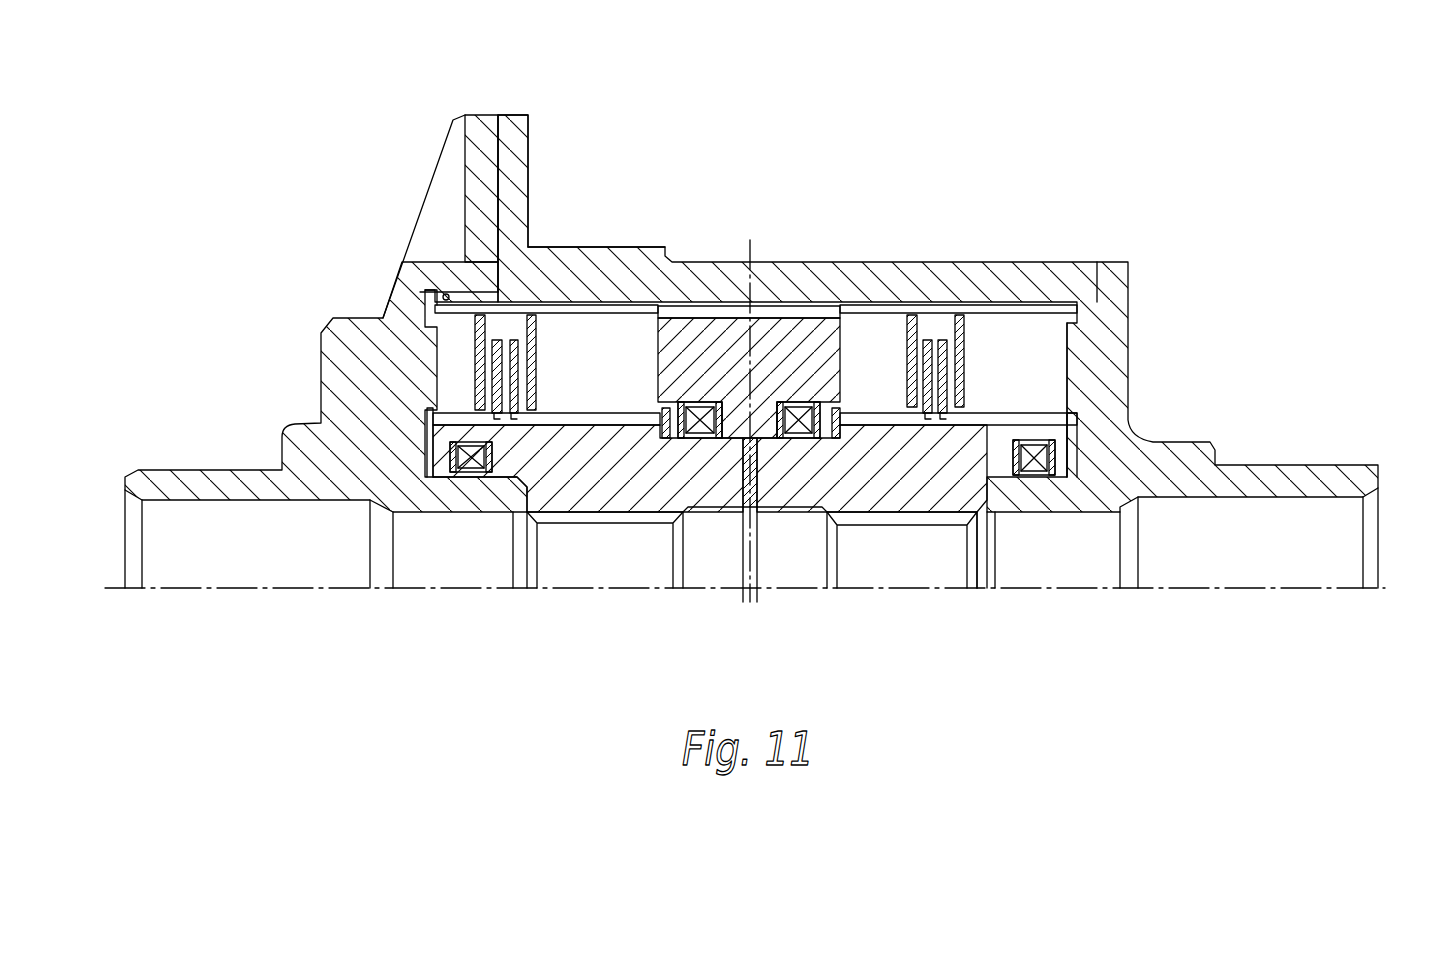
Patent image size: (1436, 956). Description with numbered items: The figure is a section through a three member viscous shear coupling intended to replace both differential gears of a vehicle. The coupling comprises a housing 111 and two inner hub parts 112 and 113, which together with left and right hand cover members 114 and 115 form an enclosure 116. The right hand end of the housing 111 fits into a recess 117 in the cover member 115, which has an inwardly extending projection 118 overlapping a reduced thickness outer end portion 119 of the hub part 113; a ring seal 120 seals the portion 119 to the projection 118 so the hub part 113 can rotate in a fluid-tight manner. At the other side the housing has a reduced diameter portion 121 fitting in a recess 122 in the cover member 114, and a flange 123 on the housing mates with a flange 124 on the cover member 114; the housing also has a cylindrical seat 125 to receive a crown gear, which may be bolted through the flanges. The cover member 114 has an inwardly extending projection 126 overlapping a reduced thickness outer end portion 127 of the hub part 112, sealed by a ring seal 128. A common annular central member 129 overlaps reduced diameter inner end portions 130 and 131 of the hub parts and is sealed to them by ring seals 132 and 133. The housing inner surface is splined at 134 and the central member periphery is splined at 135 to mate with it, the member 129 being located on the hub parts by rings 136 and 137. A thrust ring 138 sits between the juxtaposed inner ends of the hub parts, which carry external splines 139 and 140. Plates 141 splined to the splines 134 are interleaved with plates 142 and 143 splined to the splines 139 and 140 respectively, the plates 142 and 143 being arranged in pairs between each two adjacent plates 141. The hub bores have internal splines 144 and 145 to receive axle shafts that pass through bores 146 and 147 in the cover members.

The housing 111 is at (878, 272).
The hub part 112 is at (553, 482).
The hub part 113 is at (962, 485).
The cover member 114 is at (334, 345).
The cover member 115 is at (1105, 357).
The enclosure 116 is at (888, 352).
The recess 117 is at (1118, 275).
The projection 118 is at (1020, 513).
The reduced thickness outer end portion 119 is at (1005, 432).
The ring seal 120 is at (1035, 478).
The reduced diameter portion 121 is at (462, 293).
The recess 122 is at (446, 297).
The flange 123 is at (518, 131).
The flange 124 is at (483, 128).
The cylindrical seat 125 is at (575, 247).
The projection 126 is at (519, 516).
The reduced thickness outer end portion 127 is at (462, 423).
The ring seal 128 is at (470, 478).
The central member 129 is at (793, 330).
The reduced diameter inner end portion 130 is at (728, 462).
The reduced diameter inner end portion 131 is at (786, 478).
The ring seal 132 is at (705, 440).
The ring seal 133 is at (808, 443).
The splines 134 is at (1045, 318).
The splines 135 is at (697, 312).
The ring 136 is at (868, 426).
The ring 137 is at (578, 430).
The thrust ring 138 is at (759, 465).
The external splines 139 is at (583, 415).
The external splines 140 is at (980, 412).
The plates 141 is at (477, 337).
The plates 142 is at (514, 357).
The plates 143 is at (942, 358).
The internal splines 144 is at (605, 512).
The internal splines 145 is at (905, 515).
The bore 146 is at (225, 497).
The bore 147 is at (1290, 497).